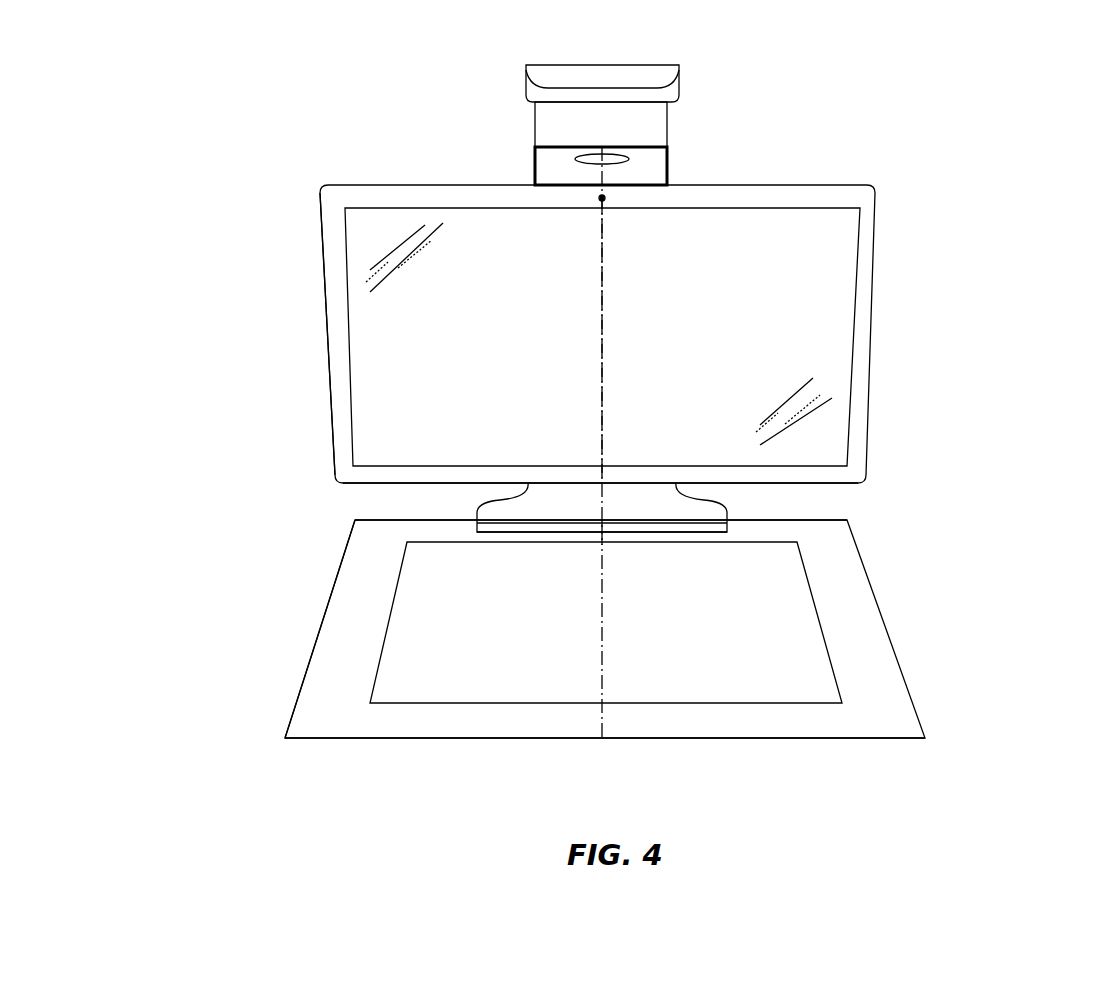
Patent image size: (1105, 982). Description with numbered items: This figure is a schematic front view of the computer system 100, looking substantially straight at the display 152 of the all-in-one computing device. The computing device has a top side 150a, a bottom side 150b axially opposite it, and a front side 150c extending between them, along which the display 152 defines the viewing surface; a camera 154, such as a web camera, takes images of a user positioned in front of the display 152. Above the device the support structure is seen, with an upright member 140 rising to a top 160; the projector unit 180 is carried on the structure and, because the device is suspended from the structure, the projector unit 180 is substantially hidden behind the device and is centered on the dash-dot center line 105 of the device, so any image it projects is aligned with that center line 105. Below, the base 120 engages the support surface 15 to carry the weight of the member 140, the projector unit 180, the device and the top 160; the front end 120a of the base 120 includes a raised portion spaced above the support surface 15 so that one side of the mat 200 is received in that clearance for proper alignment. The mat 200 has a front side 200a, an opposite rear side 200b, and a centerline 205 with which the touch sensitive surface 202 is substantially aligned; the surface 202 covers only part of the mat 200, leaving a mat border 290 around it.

The computer system 100 is at (975, 278).
The central axis 105 is at (603, 247).
The base 120 is at (458, 516).
The front end 120a is at (518, 552).
The upright member 140 is at (512, 121).
The top side 150a is at (750, 184).
The bottom side 150b is at (793, 488).
The front side 150c is at (340, 342).
The display 152 is at (720, 290).
The camera 154 is at (606, 197).
The top 160 is at (700, 52).
The projector unit 180 is at (512, 171).
The mat 200 is at (857, 672).
The front side 200a is at (780, 740).
The rear side 200b is at (395, 520).
The touch sensitive surface 202 is at (802, 613).
The centerline 205 is at (602, 560).
The mat border 290 is at (525, 726).
The support surface 15 is at (1104, 645).